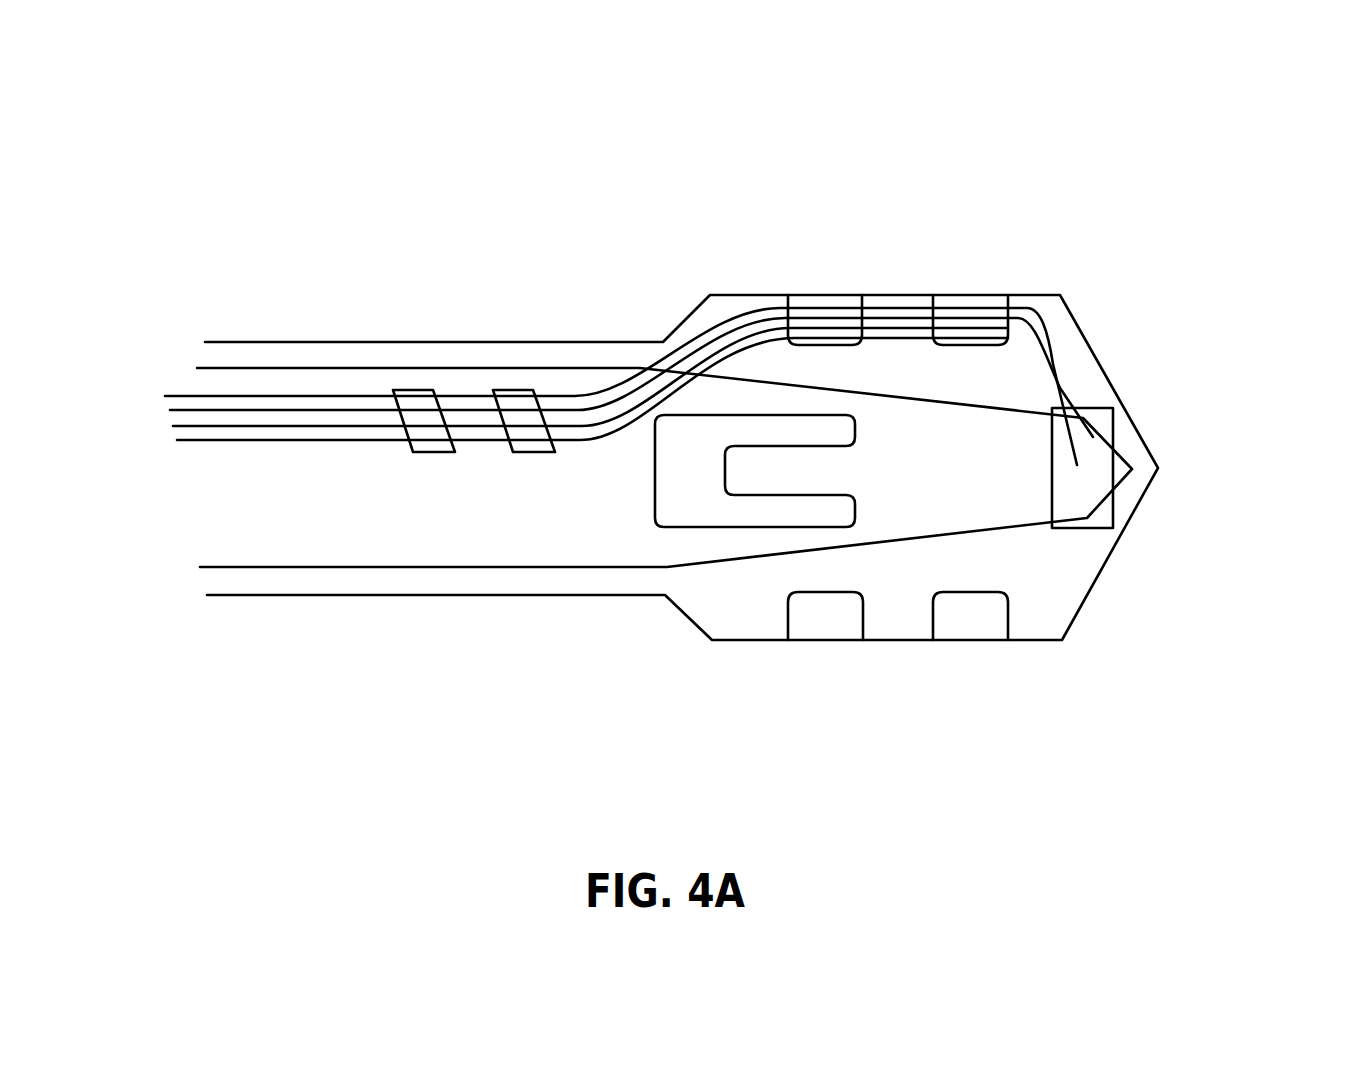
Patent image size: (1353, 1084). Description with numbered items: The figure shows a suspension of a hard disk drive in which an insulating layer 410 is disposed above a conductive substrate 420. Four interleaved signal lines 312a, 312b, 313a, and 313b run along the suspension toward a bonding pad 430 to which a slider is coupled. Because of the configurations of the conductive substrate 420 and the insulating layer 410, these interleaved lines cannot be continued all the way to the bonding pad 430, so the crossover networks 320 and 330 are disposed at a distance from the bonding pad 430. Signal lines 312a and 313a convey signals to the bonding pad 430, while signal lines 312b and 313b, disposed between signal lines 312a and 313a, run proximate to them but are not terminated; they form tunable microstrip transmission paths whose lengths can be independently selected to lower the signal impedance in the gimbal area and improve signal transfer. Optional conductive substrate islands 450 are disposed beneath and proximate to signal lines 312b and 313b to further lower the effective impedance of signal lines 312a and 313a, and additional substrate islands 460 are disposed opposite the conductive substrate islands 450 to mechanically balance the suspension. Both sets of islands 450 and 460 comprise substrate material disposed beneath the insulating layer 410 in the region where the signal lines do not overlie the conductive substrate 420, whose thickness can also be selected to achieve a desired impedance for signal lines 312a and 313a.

The insulating layer 410 is at (477, 580).
The conductive substrate 420 is at (262, 550).
The bonding pad 430 is at (1102, 518).
The conductive substrate islands 450 is at (820, 300).
The substrate islands 460 is at (813, 623).
The signal line 312a is at (203, 440).
The signal line 312b is at (293, 408).
The signal line 313a is at (188, 395).
The signal line 313b is at (377, 425).
The crossover network 320 is at (418, 388).
The crossover network 330 is at (523, 388).